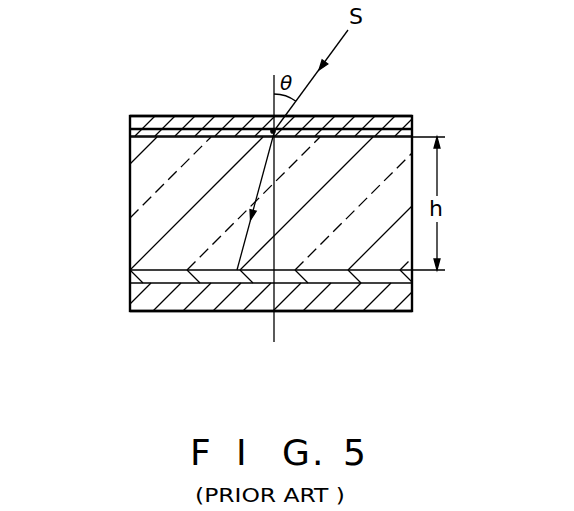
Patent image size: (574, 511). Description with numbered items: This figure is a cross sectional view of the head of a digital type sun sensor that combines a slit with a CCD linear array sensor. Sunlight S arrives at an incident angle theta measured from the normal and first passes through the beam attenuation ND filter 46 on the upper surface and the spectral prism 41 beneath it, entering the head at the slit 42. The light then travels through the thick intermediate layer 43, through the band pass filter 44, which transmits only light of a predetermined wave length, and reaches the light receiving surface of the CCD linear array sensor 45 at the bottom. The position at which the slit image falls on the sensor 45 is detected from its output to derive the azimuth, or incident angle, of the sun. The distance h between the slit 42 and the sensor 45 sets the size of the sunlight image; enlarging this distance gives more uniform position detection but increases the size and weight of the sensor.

The spectral prism 41 is at (130, 133).
The slit 42 is at (271, 129).
The substrate 43 is at (130, 226).
The band pass filter 44 is at (130, 279).
The CCD linear array sensor 45 is at (206, 312).
The beam attenuation ND filter 46 is at (394, 116).